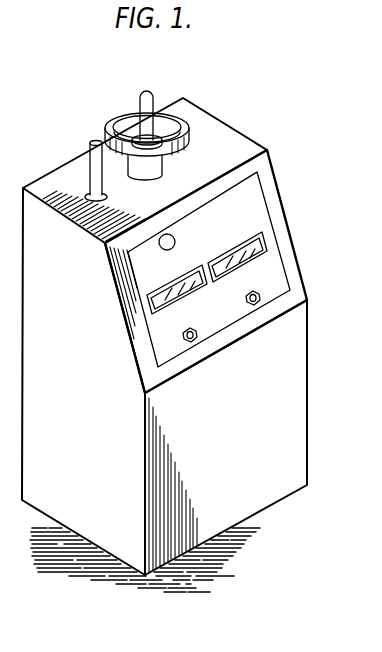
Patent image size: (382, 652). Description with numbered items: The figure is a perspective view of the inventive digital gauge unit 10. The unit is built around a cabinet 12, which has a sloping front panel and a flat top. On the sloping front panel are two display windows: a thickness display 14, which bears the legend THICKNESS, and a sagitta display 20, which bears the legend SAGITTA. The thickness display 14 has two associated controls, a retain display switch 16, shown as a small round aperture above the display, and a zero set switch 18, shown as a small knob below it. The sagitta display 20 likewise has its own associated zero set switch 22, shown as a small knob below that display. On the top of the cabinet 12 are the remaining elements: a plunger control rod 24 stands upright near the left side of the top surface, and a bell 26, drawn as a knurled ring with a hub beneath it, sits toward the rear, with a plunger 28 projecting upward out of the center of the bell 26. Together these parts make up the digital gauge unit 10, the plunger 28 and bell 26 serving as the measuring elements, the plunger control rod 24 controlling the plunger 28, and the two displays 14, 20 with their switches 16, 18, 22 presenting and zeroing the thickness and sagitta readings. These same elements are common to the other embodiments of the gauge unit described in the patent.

The digital gauge unit 10 is at (302, 153).
The cabinet 12 is at (309, 340).
The thickness display 14 is at (146, 310).
The retain display switch 16 is at (159, 244).
The zero set switch 18 is at (191, 343).
The sagitta display 20 is at (266, 229).
The zero set switch 22 is at (255, 306).
The plunger control rod 24 is at (86, 166).
The bell 26 is at (163, 110).
The plunger 28 is at (141, 95).